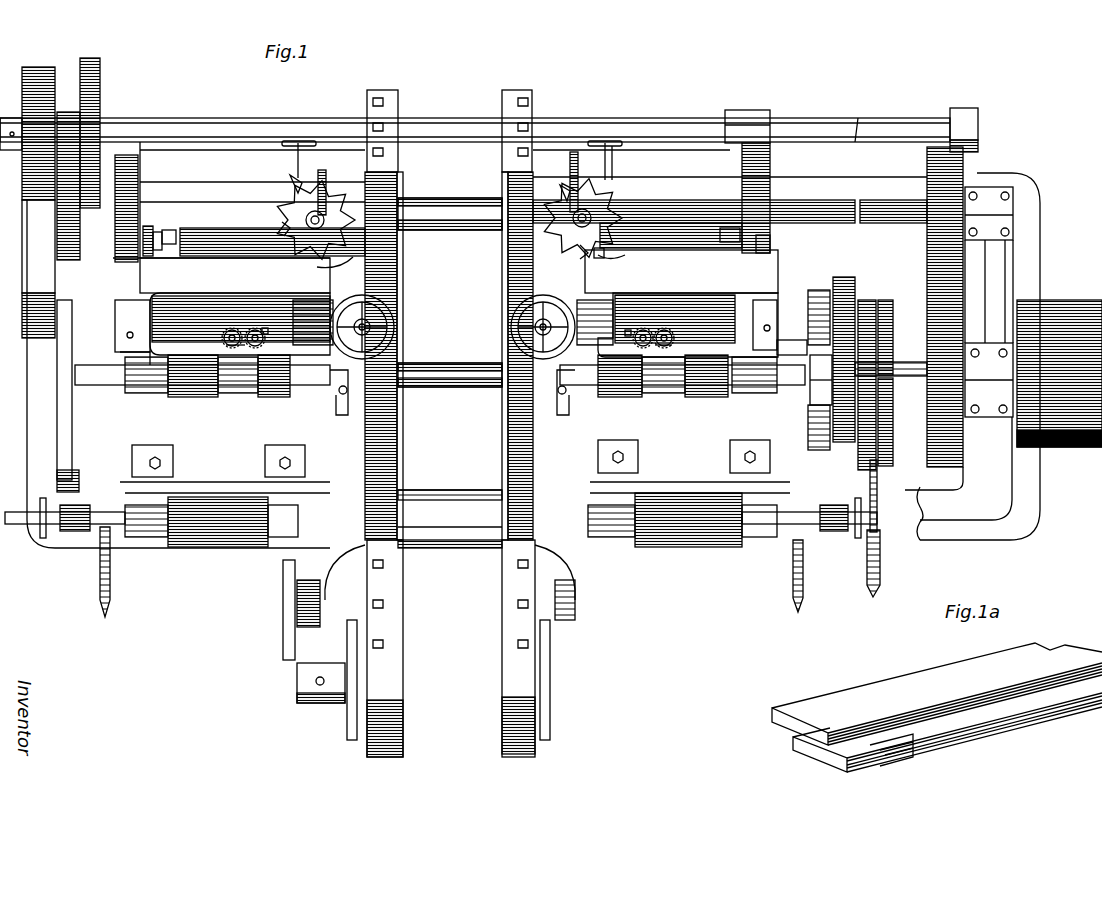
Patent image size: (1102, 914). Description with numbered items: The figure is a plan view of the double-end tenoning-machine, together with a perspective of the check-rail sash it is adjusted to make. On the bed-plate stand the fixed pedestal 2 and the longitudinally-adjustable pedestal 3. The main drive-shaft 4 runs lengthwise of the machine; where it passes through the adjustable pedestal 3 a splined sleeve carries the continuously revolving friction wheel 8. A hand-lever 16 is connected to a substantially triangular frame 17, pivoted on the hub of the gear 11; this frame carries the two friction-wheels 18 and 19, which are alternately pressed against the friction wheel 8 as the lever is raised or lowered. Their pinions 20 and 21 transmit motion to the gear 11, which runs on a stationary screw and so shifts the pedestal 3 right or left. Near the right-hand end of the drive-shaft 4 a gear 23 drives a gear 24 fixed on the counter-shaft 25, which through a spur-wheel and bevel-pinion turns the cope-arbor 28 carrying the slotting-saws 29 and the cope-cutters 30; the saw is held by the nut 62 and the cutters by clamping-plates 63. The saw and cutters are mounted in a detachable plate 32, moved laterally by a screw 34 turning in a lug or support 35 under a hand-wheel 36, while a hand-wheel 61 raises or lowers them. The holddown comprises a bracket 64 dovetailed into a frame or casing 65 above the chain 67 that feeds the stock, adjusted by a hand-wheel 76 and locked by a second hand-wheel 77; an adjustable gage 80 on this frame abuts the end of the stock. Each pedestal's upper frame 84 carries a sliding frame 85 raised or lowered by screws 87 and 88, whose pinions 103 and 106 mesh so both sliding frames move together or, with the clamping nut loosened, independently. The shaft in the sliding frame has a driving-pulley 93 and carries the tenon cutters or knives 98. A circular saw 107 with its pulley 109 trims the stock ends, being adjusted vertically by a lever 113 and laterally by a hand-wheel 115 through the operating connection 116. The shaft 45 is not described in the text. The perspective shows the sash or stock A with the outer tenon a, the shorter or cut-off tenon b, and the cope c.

In FIG. 1, the fixed pedestal 2 is at (235, 275).
In FIG. 1, the longitudinally-adjustable pedestal 3 is at (681, 271).
In FIG. 1, the main drive-shaft 4 is at (445, 366).
In FIG. 1, the friction wheel 8 is at (815, 398).
In FIG. 1, the gear 11 is at (893, 432).
In FIG. 1, the hand-lever 16 is at (873, 600).
In FIG. 1, the triangular frame 17 is at (858, 300).
In FIG. 1, the friction-wheel 18 is at (820, 290).
In FIG. 1, the friction-wheel 19 is at (830, 452).
In FIG. 1, the pinion 20 is at (893, 306).
In FIG. 1, the pinion 21 is at (893, 392).
In FIG. 1, the gear 23 is at (930, 467).
In FIG. 1, the gear 24 is at (927, 162).
In FIG. 1, the longitudinal counter-shaft 25 is at (456, 230).
In FIG. 1, the cope-arbor 28 is at (605, 255).
In FIG. 1, the slotting-saws 29 is at (285, 225).
In FIG. 1, the cope-cutters 30 is at (300, 180).
In FIG. 1, the detachable plate 32 is at (252, 256).
In FIG. 1, the screw 34 is at (170, 230).
In FIG. 1, the lug or support 35 is at (150, 256).
In FIG. 1, the hand-wheel 36 is at (770, 243).
In FIG. 1, the shaft 45 is at (40, 517).
In FIG. 1, the hand-wheel 61 is at (296, 140).
In FIG. 1, the nut 62 is at (285, 205).
In FIG. 1, the clamping-plates 63 is at (300, 258).
In FIG. 1, the bracket 64 is at (322, 305).
In FIG. 1, the frame or casing 65 is at (502, 440).
In FIG. 1, the chain 67 is at (502, 95).
In FIG. 1, the hand-wheel 76 is at (512, 310).
In FIG. 1, the hand-wheel 77 is at (533, 327).
In FIG. 1, the adjustable gage 80 is at (322, 170).
In FIG. 1, the upper frame 84 is at (150, 320).
In FIG. 1, the sliding frame 85 is at (125, 355).
In FIG. 1, the screw 87 is at (635, 336).
In FIG. 1, the screw 88 is at (454, 330).
In FIG. 1, the driving-pulley 93 is at (185, 400).
In FIG. 1, the tenon cutters or knives 98 is at (330, 415).
In FIG. 1, the pinion 103 is at (455, 323).
In FIG. 1, the pinion 106 is at (226, 345).
In FIG. 1, the circular saw 107 is at (320, 570).
In FIG. 1, the pulley 109 is at (451, 520).
In FIG. 1, the lever 113 is at (105, 620).
In FIG. 1, the hand-wheel 115 is at (870, 560).
In FIG. 1, the operating connection 116 is at (80, 532).
In FIG. 1A, the sash or stock A is at (937, 688).
In FIG. 1A, the outer tenon a is at (770, 718).
In FIG. 1A, the shorter or cut-off tenon b is at (808, 752).
In FIG. 1A, the cope c is at (910, 760).